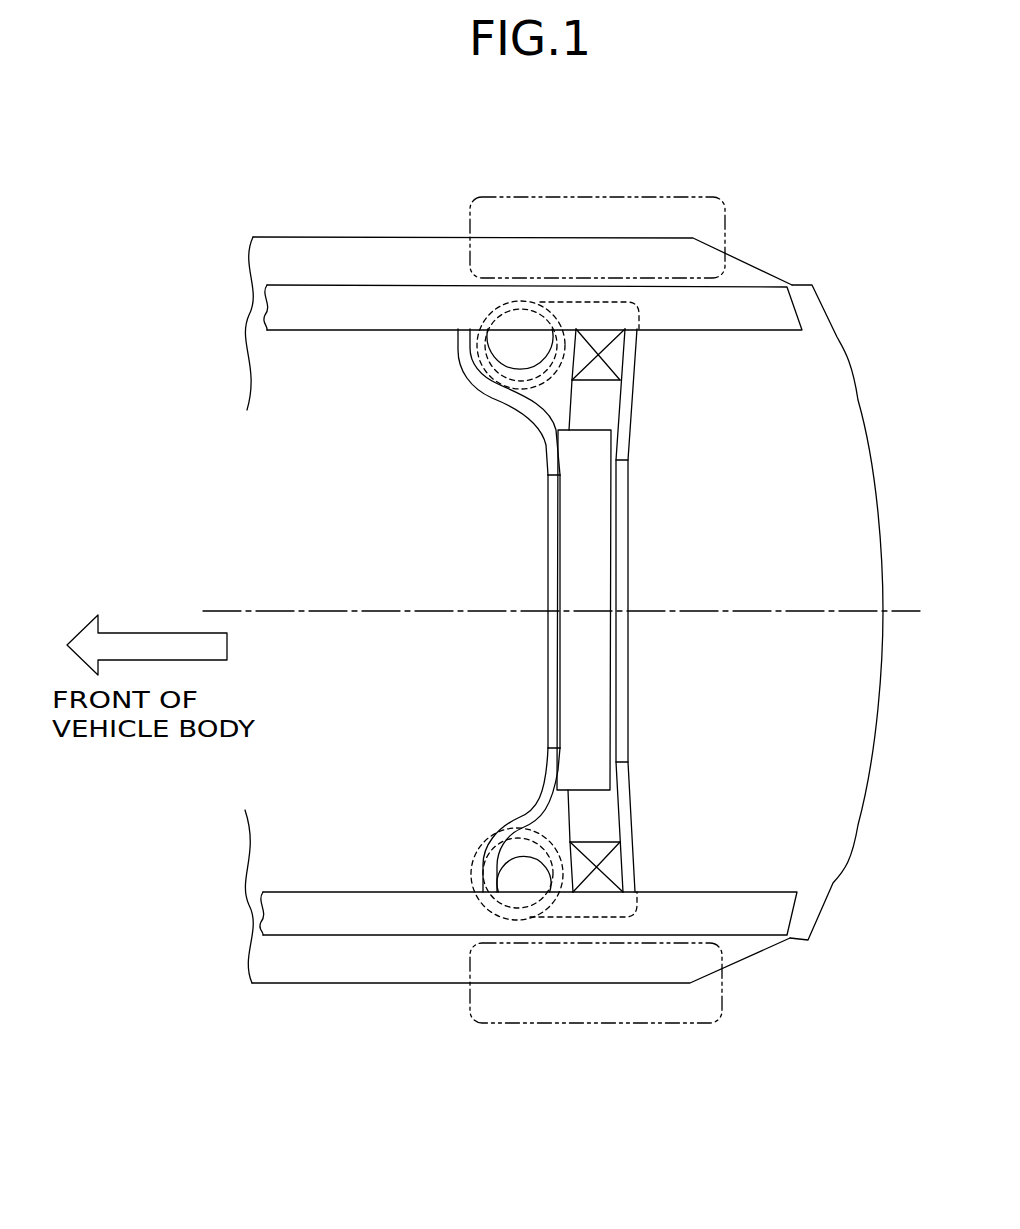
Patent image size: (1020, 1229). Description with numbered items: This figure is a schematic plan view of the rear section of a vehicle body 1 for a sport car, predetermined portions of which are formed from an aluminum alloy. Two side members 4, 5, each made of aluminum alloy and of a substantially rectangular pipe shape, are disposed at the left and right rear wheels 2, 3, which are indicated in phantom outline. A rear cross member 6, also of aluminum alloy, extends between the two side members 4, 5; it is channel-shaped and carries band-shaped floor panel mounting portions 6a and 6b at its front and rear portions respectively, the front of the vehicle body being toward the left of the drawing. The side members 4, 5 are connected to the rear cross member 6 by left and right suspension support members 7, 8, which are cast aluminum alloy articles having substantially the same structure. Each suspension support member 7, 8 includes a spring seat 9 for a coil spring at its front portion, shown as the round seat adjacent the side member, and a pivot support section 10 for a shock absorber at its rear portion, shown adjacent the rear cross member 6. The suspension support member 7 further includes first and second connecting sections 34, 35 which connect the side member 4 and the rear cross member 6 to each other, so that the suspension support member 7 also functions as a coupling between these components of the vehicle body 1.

The vehicle body 1 is at (842, 343).
The left rear wheel 2 is at (680, 198).
The right rear wheel 3 is at (676, 1022).
The side member 4 is at (316, 318).
The side member 5 is at (314, 905).
The rear cross member 6 is at (595, 610).
The floor panel mounting portion 6a is at (549, 585).
The floor panel mounting portion 6b is at (623, 563).
The suspension support member 7 is at (645, 374).
The suspension support member 8 is at (640, 847).
The spring seat 9 is at (476, 347).
The pivot support section 10 is at (604, 405).
The first connecting section 34 is at (478, 306).
The second connecting section 35 is at (537, 445).